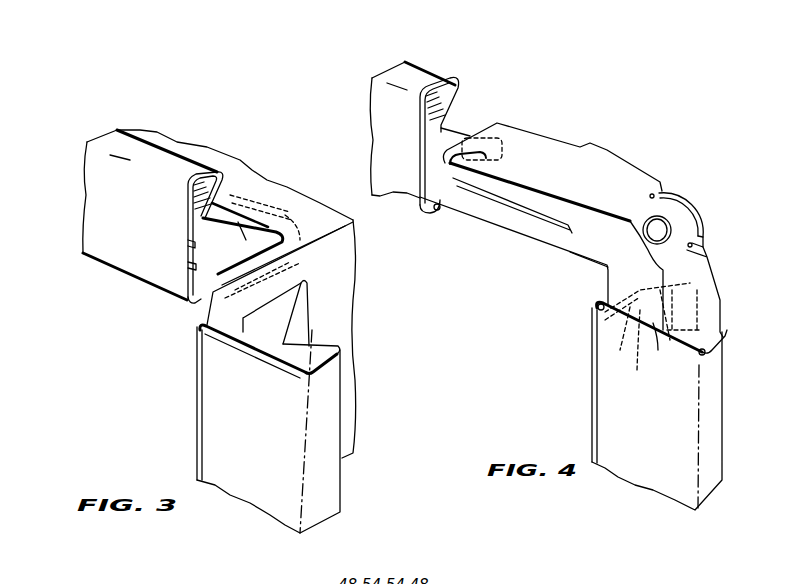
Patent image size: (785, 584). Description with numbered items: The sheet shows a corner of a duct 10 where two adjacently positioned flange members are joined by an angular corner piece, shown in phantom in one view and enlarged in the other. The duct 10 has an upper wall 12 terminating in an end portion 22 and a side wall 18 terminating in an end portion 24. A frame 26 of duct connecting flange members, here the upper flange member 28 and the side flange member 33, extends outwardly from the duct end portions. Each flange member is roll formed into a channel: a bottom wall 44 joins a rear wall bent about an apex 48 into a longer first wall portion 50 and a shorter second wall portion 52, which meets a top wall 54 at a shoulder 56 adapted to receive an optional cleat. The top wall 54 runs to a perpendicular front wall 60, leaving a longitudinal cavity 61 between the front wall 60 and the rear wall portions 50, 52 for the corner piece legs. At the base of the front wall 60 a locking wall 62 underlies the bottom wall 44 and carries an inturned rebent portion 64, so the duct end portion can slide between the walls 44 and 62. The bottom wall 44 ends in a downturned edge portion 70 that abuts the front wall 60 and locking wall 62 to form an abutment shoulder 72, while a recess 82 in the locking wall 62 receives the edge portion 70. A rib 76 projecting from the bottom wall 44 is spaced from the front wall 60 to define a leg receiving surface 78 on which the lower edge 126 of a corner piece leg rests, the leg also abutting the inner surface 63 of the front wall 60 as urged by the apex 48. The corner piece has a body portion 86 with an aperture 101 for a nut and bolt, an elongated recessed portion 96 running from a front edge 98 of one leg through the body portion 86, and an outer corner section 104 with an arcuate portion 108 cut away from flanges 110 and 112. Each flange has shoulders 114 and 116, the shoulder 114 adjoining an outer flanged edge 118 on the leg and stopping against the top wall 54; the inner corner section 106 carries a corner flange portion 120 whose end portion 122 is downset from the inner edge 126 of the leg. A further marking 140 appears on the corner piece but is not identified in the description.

In FIG. 3, the duct 10 is at (252, 142).
In FIG. 3, the upper wall 12 is at (324, 224).
In FIG. 3, the vertical wall 18 is at (352, 250).
In FIG. 3, the end portion 22 is at (202, 303).
In FIG. 3, the end portion 24 is at (200, 325).
In FIG. 4, the frame 26 is at (350, 98).
In FIG. 3, the upper flange member 28 is at (203, 307).
In FIG. 3, the side flange member 33 is at (352, 487).
In FIG. 4, the side flange member 33 is at (736, 438).
In FIG. 3, the bottom wall section 44 is at (246, 251).
In FIG. 3, the apex 48 is at (190, 205).
In FIG. 3, the first wall portion 50 is at (237, 222).
In FIG. 4, the first wall portion 50 is at (718, 302).
In FIG. 3, the second wall portion 52 is at (224, 176).
In FIG. 4, the second wall portion 52 is at (448, 112).
In FIG. 3, the top wall 54 is at (110, 138).
In FIG. 4, the top wall 54 is at (400, 75).
In FIG. 3, the shoulder 56 is at (218, 168).
In FIG. 4, the shoulder 56 is at (457, 86).
In FIG. 3, the front wall 60 is at (210, 417).
In FIG. 4, the front wall 60 is at (375, 142).
In FIG. 3, the cavity 61 is at (191, 231).
In FIG. 4, the cavity 61 is at (437, 133).
In FIG. 3, the locking wall 62 is at (243, 292).
In FIG. 4, the locking wall 62 is at (439, 212).
In FIG. 3, the inner surface 63 is at (188, 244).
In FIG. 4, the inner surface 63 is at (427, 144).
In FIG. 3, the inturned rebent portion 64 is at (270, 246).
In FIG. 4, the downward edge portion 70 is at (407, 193).
In FIG. 3, the abutment shoulder 72 is at (160, 307).
In FIG. 4, the abutment shoulder 72 is at (430, 232).
In FIG. 3, the rib 76 is at (190, 266).
In FIG. 4, the rib 76 is at (632, 351).
In FIG. 4, the corner piece leg receiving surface 78 is at (620, 350).
In FIG. 4, the recess 82 is at (437, 212).
In FIG. 4, the body portion 86 is at (618, 226).
In FIG. 4, the recessed portion 96 is at (520, 207).
In FIG. 4, the front edge 98 is at (433, 166).
In FIG. 4, the aperture 101 is at (668, 222).
In FIG. 4, the outer corner section 104 is at (706, 252).
In FIG. 4, the inner corner section 106 is at (636, 261).
In FIG. 4, the arcuate portion 108 is at (690, 200).
In FIG. 4, the flange 110 is at (600, 150).
In FIG. 4, the flange 112 is at (719, 313).
In FIG. 4, the shoulder 114 is at (585, 146).
In FIG. 4, the shoulder 116 is at (661, 182).
In FIG. 4, the outer flanged edge 118 is at (535, 130).
In FIG. 4, the corner flange portion 120 is at (590, 252).
In FIG. 4, the end portion 122 is at (575, 232).
In FIG. 4, the inner edge 126 is at (492, 225).
In FIG. 4, the weld 140 is at (650, 195).